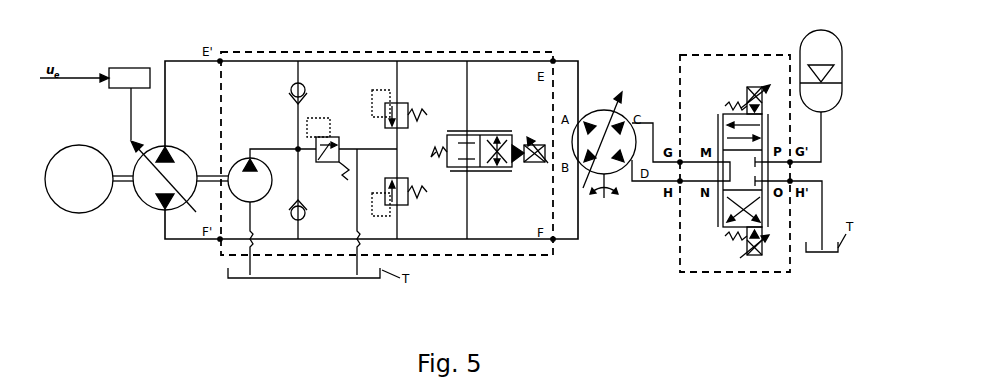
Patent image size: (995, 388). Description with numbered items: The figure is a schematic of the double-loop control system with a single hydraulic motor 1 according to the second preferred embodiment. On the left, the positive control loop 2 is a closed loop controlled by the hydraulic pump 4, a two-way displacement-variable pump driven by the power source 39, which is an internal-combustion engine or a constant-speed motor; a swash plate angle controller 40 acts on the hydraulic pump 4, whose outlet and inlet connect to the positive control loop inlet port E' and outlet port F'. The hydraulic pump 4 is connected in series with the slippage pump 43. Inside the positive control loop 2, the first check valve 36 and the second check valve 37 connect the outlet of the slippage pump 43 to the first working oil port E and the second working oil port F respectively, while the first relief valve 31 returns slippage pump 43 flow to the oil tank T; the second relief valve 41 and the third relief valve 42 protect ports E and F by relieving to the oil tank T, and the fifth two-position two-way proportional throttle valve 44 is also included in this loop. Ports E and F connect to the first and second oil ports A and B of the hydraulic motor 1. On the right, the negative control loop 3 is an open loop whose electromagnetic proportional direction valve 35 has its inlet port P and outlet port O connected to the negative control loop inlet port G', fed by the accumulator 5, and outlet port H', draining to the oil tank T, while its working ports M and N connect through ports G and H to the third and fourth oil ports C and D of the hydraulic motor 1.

The hydraulic motor 1 is at (600, 114).
The positive control loop 2 is at (468, 256).
The negative control loop 3 is at (680, 63).
The hydraulic pump 4 is at (182, 160).
The accumulator 5 is at (805, 50).
The first relief valve 31 is at (317, 160).
The electromagnetic proportional direction valve 35 is at (752, 88).
The first check valve 36 is at (291, 87).
The second check valve 37 is at (291, 218).
The power source 39 is at (68, 158).
The swash plate angle controller 40 is at (128, 72).
The second relief valve 41 is at (404, 127).
The third relief valve 42 is at (404, 182).
The slippage pump 43 is at (265, 182).
The fifth two-position two-way proportional throttle valve 44 is at (504, 133).